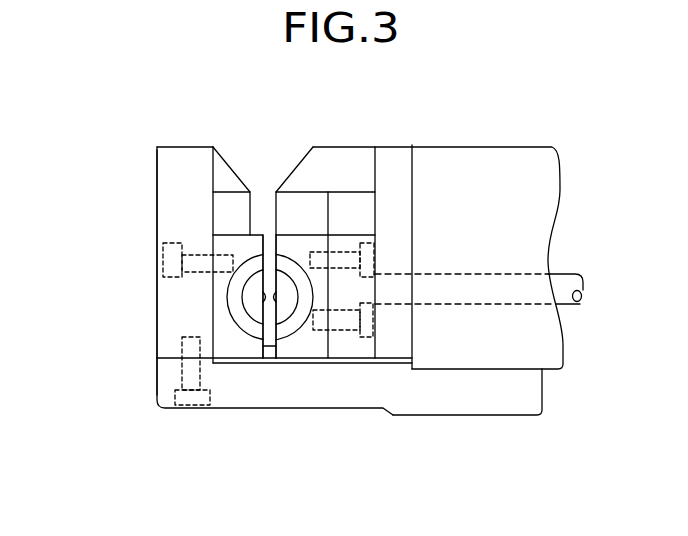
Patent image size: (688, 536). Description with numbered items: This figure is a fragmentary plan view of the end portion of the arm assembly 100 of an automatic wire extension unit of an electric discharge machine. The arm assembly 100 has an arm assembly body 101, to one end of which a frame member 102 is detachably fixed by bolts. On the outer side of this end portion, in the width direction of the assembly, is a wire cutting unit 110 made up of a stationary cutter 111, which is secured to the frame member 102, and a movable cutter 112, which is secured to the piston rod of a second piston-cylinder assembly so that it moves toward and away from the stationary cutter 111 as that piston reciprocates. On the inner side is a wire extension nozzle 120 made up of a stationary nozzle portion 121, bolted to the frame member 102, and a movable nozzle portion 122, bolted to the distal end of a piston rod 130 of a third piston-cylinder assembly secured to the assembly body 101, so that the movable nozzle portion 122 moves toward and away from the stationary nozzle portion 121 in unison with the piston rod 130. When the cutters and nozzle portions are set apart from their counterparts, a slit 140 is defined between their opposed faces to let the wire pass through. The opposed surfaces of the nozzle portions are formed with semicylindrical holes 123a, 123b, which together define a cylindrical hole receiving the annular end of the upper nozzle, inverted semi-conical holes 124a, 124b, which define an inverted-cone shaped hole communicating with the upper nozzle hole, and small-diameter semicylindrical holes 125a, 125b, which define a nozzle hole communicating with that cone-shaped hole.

The arm assembly 100 is at (529, 133).
The arm assembly body 101 is at (535, 388).
The frame member 102 is at (168, 217).
The wire cutting unit 110 is at (291, 168).
The stationary cutter 111 is at (236, 203).
The movable cutter 112 is at (283, 208).
The wire extension nozzle 120 is at (291, 357).
The stationary nozzle portion 121 is at (241, 352).
The movable nozzle portion 122 is at (295, 358).
The semicylindrical hole 123a is at (229, 290).
The semicylindrical hole 123b is at (307, 318).
The inverted semi-conical hole 124a is at (262, 298).
The inverted semi-conical hole 124b is at (278, 300).
The small-diameter semicylindrical hole 125a is at (245, 310).
The small-diameter semicylindrical hole 125b is at (284, 308).
The piston rod 130 is at (570, 274).
The slit 140 is at (272, 226).